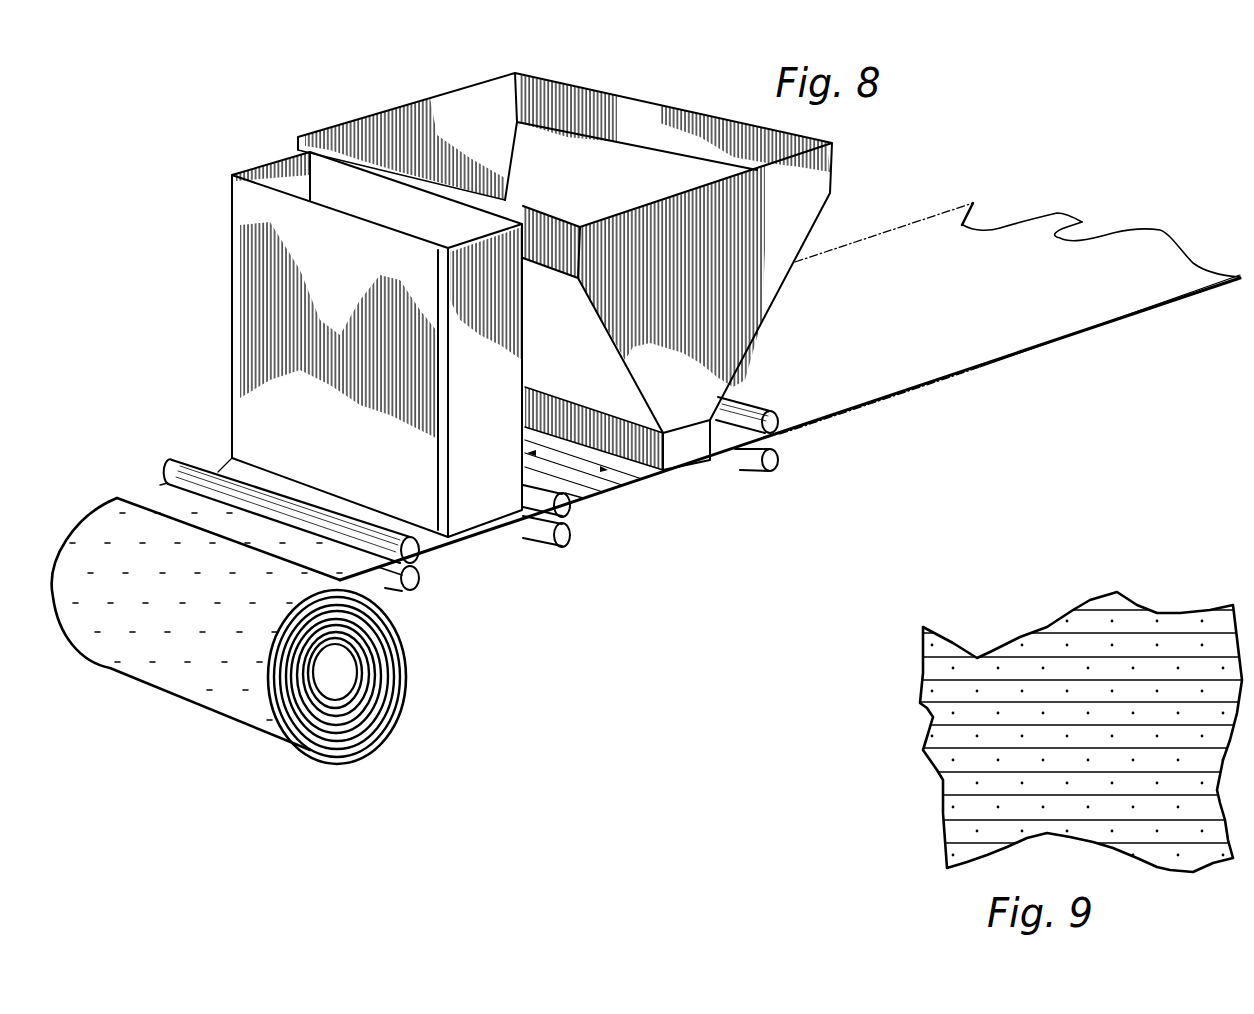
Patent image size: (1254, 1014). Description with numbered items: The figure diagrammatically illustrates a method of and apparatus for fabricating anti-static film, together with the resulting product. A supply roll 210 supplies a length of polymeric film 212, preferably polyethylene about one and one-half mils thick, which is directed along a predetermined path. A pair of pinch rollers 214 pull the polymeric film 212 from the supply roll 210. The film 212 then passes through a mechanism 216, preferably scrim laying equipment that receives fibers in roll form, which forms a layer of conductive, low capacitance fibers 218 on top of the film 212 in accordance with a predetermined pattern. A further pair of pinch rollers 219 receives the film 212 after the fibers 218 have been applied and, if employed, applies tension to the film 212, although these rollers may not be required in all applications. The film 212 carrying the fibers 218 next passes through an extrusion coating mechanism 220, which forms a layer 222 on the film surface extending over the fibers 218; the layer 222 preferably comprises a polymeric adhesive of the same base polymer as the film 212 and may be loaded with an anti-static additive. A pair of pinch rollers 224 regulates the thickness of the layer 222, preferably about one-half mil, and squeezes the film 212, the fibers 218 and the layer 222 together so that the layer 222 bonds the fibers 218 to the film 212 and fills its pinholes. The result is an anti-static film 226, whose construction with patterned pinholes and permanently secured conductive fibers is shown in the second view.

In FIG. 8, the supply roll 210 is at (370, 776).
In FIG. 8, the polymeric film 212 is at (490, 556).
In FIG. 8, the pinch rollers 214 is at (177, 458).
In FIG. 8, the mechanism 216 is at (207, 201).
In FIG. 8, the layer of conductive, low capacitance fibers 218 is at (512, 549).
In FIG. 8, the pinch rollers 219 is at (572, 528).
In FIG. 8, the extrusion coating mechanism 220 is at (447, 60).
In FIG. 8, the layer 222 is at (893, 362).
In FIG. 8, the pinch rollers 224 is at (783, 458).
In FIG. 8, the anti-static film 226 is at (1110, 348).
In FIG. 9, the anti-static film 226 is at (1057, 703).